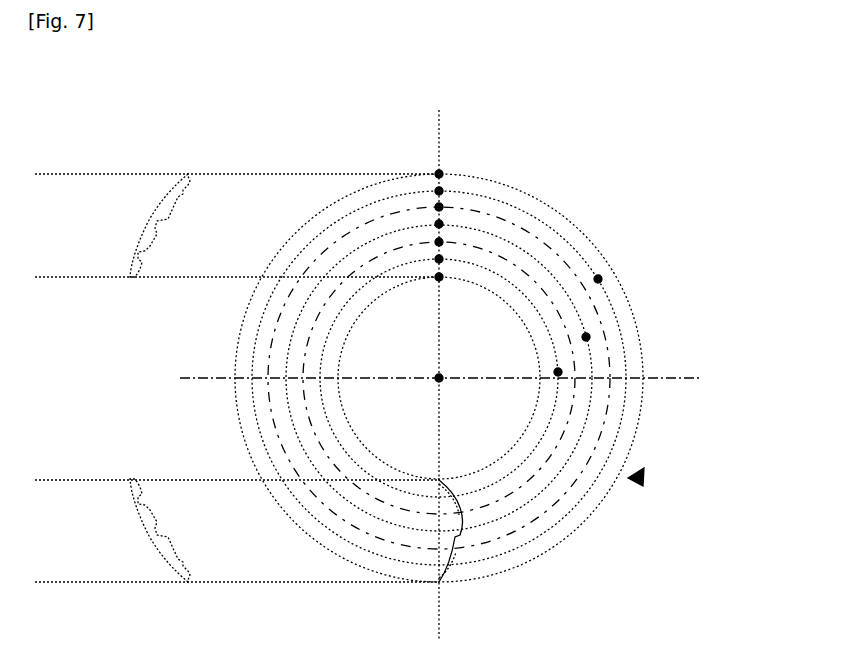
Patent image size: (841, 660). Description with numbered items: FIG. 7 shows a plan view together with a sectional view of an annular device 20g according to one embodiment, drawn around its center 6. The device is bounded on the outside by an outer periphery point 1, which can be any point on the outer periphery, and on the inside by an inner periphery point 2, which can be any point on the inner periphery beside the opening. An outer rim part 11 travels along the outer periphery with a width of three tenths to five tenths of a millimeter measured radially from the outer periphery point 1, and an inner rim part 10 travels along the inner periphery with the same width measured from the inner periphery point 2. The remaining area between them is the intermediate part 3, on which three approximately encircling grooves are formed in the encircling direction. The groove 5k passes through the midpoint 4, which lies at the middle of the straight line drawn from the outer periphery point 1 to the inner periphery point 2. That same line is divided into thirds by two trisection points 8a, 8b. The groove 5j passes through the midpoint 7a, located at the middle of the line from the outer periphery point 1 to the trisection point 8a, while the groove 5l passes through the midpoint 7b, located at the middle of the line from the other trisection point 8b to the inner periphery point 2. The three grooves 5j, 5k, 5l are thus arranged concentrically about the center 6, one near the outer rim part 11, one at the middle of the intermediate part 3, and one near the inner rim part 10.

The outer periphery point 1 is at (439, 174).
The inner periphery point 2 is at (439, 277).
The intermediate part 3 is at (442, 490).
The midpoint 4 is at (439, 259).
The approximately encircling groove 5j is at (598, 279).
The approximately encircling groove 5k is at (586, 337).
The approximately encircling groove 5l is at (558, 372).
The center 6 is at (439, 378).
The midpoint 7a is at (439, 224).
The midpoint 7b is at (439, 277).
The trisection point 8a is at (439, 207).
The trisection point 8b is at (439, 242).
The inner rim part 10 is at (439, 480).
The outer rim part 11 is at (440, 578).
The annular device 20g is at (643, 478).